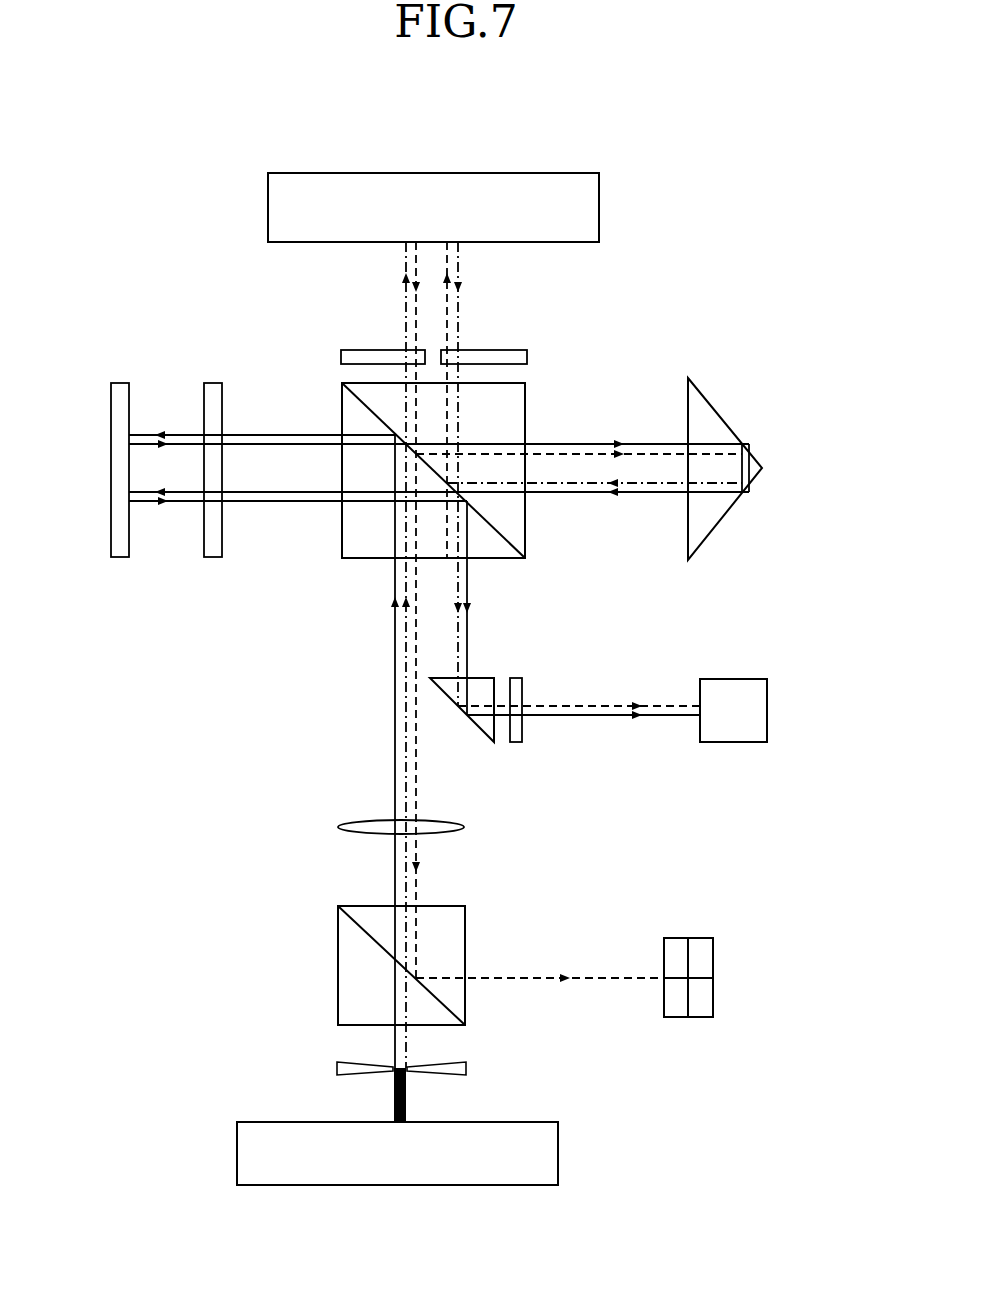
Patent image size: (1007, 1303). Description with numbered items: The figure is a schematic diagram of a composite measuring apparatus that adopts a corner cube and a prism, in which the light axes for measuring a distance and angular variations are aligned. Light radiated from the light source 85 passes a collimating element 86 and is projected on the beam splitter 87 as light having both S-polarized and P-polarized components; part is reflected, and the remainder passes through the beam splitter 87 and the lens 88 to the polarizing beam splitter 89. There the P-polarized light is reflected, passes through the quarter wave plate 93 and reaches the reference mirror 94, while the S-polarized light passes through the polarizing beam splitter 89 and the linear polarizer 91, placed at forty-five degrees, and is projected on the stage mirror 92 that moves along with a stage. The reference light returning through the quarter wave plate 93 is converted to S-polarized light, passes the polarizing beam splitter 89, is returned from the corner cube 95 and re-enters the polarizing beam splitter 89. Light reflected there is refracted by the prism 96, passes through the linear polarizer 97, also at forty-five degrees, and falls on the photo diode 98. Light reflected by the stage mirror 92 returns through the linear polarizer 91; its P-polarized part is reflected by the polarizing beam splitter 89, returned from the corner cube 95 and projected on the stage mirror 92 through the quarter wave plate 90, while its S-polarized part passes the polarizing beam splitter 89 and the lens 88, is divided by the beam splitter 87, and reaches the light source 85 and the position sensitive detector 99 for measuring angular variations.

The light source 85 is at (558, 1152).
The collimating lens 86 is at (337, 1066).
The beam splitter 87 is at (465, 933).
The lens 88 is at (465, 827).
The polarizing beam splitter 89 is at (341, 415).
The quarter wave plate 90 is at (482, 350).
The linear polarizer 91 is at (386, 350).
The stage mirror 92 is at (438, 173).
The quarter wave plate 93 is at (212, 557).
The reference mirror 94 is at (118, 557).
The corner cube 95 is at (744, 441).
The prism 96 is at (468, 678).
The linear polarizer 97 is at (523, 706).
The photo diode 98 is at (767, 706).
The position sensitive detector 99 is at (713, 978).